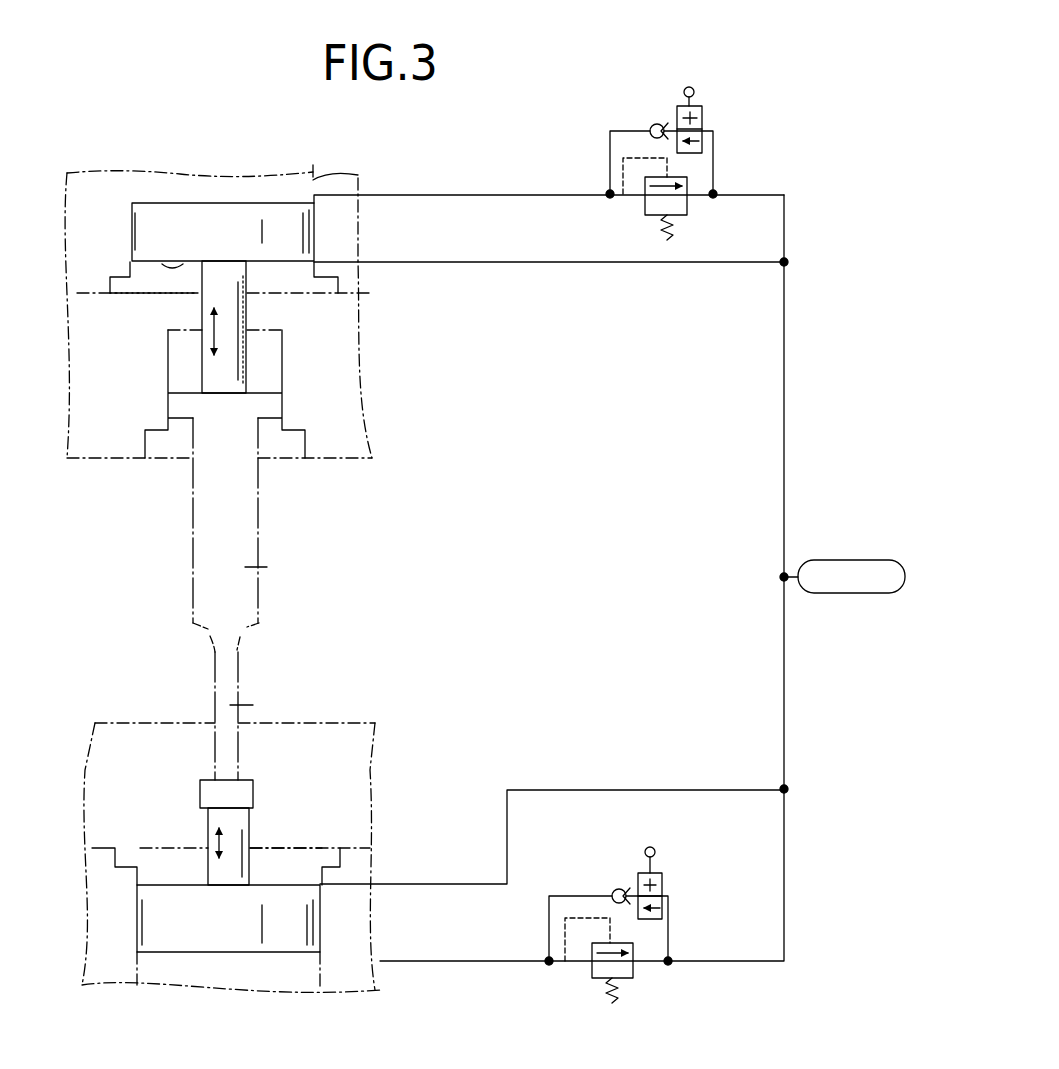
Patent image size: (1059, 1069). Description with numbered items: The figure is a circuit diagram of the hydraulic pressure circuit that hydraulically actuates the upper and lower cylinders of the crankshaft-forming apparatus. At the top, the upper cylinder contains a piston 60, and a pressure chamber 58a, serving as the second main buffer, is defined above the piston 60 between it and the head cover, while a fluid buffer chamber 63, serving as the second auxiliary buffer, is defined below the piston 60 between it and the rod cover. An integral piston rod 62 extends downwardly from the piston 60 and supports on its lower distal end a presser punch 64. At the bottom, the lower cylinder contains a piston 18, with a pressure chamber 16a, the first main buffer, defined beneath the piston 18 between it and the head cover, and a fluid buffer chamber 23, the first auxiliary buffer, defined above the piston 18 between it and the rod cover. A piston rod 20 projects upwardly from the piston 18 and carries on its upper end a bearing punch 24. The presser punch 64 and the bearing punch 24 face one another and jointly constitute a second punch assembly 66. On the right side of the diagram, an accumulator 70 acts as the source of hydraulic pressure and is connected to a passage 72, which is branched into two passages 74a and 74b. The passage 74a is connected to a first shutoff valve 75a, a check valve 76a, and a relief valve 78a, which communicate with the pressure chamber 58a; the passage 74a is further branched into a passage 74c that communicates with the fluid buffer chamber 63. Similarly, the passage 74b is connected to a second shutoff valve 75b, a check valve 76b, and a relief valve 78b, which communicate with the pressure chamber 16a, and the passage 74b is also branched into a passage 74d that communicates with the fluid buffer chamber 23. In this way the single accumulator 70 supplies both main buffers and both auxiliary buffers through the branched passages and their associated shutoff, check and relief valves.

The pressure chamber 58a is at (345, 165).
The piston 60 is at (193, 210).
The fluid buffer chamber 63 is at (160, 299).
The piston rod 62 is at (247, 319).
The presser punch 64 is at (278, 559).
The second punch assembly 66 is at (270, 646).
The bearing punch 24 is at (267, 702).
The pressure chamber 16a is at (275, 982).
The piston 18 is at (223, 930).
The piston rod 20 is at (253, 820).
The fluid buffer chamber 23 is at (287, 858).
The passage 74c is at (490, 267).
The passage 74a is at (784, 473).
The passage 74b is at (787, 802).
The passage 74d is at (618, 788).
The passage 72 is at (792, 580).
The accumulator 70 is at (853, 560).
The check valve 76a is at (650, 122).
The first shutoff valve 75a is at (702, 122).
The relief valve 78a is at (645, 210).
The check valve 76b is at (618, 885).
The second shutoff valve 75b is at (662, 878).
The relief valve 78b is at (592, 967).